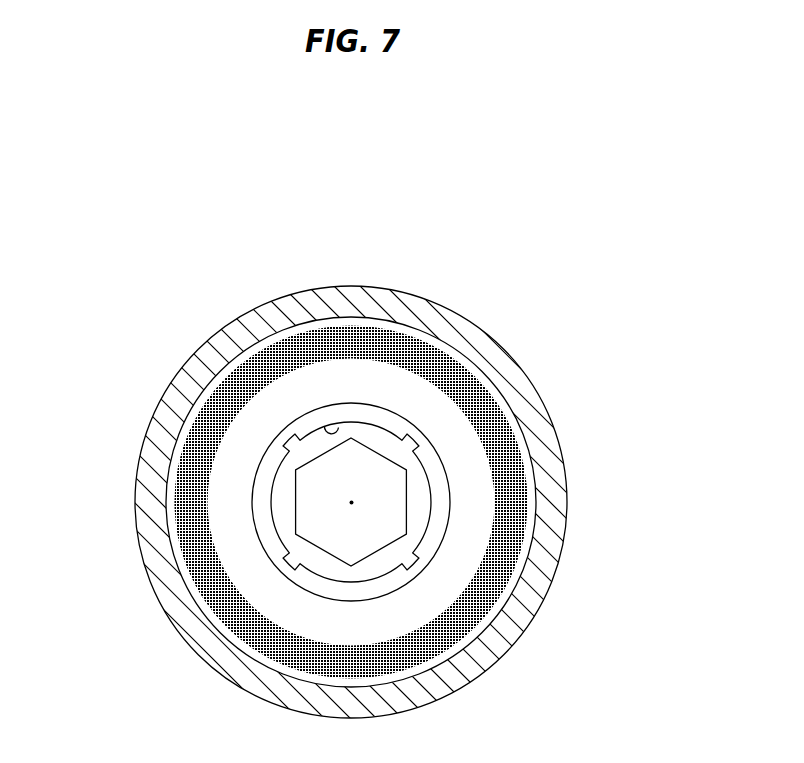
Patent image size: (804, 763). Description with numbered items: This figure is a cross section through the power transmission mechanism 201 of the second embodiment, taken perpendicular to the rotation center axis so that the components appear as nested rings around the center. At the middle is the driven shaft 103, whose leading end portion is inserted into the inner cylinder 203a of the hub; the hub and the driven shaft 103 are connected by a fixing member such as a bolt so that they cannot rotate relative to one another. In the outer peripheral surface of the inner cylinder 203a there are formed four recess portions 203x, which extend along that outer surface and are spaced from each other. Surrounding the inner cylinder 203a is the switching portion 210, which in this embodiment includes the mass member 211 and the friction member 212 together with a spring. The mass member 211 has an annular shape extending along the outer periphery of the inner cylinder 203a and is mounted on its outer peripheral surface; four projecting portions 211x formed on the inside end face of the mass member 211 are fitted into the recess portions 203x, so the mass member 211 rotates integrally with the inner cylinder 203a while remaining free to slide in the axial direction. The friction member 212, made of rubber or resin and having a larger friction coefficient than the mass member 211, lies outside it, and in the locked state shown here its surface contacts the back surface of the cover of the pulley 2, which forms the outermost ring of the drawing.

The power transmission mechanism 201 is at (566, 183).
The pulley 2 is at (490, 358).
The switching portion 210 is at (82, 340).
The friction member 212 is at (217, 387).
The mass member 211 is at (230, 488).
The projecting portion 211x is at (338, 428).
The recess portion 203x is at (375, 430).
The inner cylinder 203a is at (423, 517).
The driven shaft 103 is at (338, 545).